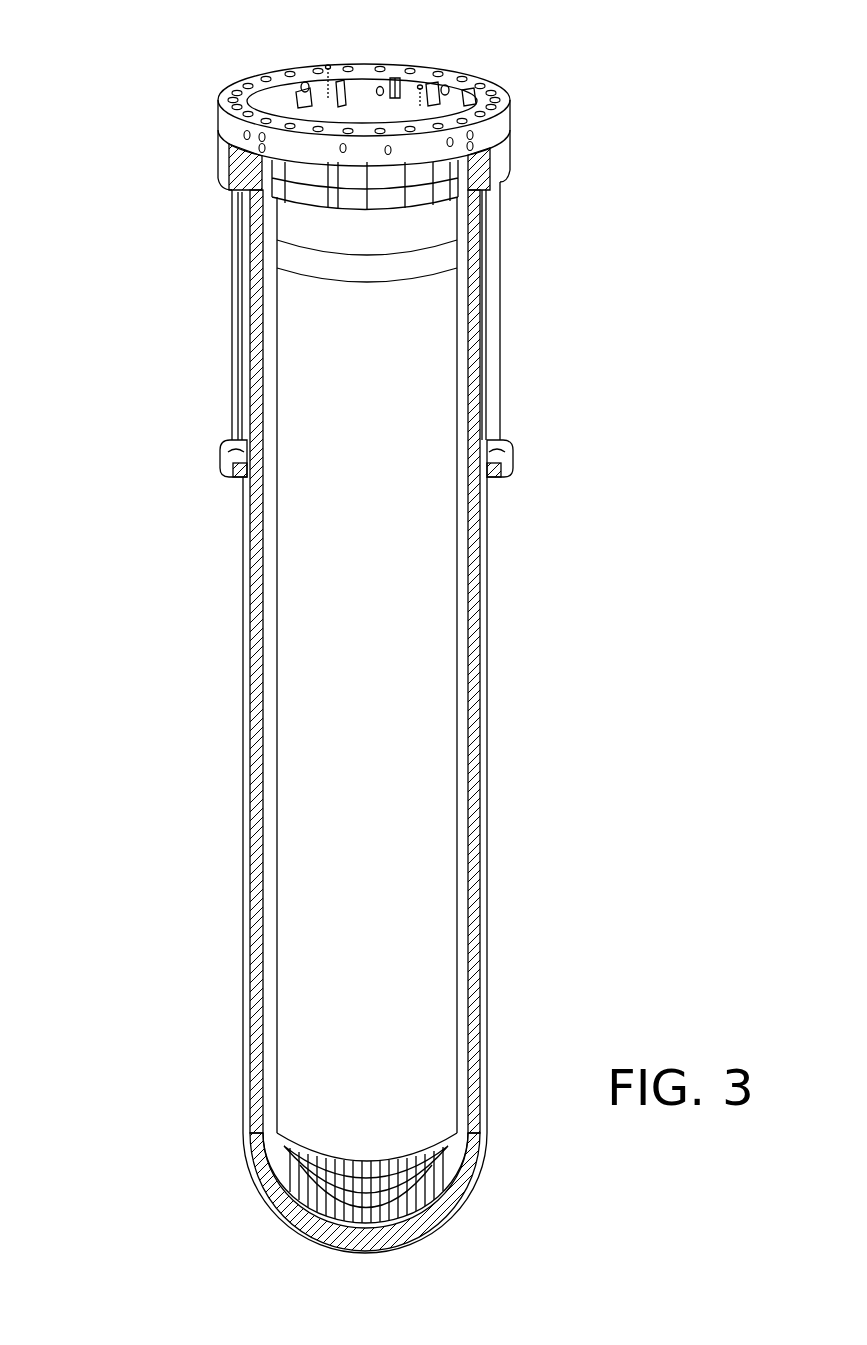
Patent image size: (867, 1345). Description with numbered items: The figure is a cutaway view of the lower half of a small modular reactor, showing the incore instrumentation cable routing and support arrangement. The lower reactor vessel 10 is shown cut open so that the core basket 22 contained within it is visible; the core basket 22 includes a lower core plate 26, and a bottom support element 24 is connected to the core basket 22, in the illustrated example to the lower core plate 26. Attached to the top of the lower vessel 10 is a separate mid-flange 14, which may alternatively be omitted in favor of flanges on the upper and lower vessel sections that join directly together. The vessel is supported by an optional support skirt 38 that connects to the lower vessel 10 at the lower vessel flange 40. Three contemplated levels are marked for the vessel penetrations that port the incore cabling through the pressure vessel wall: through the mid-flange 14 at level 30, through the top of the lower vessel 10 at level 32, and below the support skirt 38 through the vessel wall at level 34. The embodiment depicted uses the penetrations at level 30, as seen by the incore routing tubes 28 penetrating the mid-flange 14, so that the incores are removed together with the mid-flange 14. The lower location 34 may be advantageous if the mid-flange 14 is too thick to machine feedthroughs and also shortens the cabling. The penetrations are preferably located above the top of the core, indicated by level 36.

The lower reactor vessel 10 is at (243, 648).
The mid-flange 14 is at (217, 120).
The core basket 22 is at (425, 597).
The bottom support element 24 is at (447, 1200).
The lower core plate 26 is at (433, 1157).
The incore routing tubes 28 is at (420, 92).
The level of incore vessel penetrations through the mid-flange 30 is at (512, 118).
The level of incore vessel penetrations through the top of the lower vessel 32 is at (511, 155).
The level of incore vessel penetrations below the support skirt 34 is at (487, 493).
The level of the top of the core 36 is at (485, 829).
The support skirt 38 is at (232, 303).
The lower vessel flange 40 is at (220, 157).